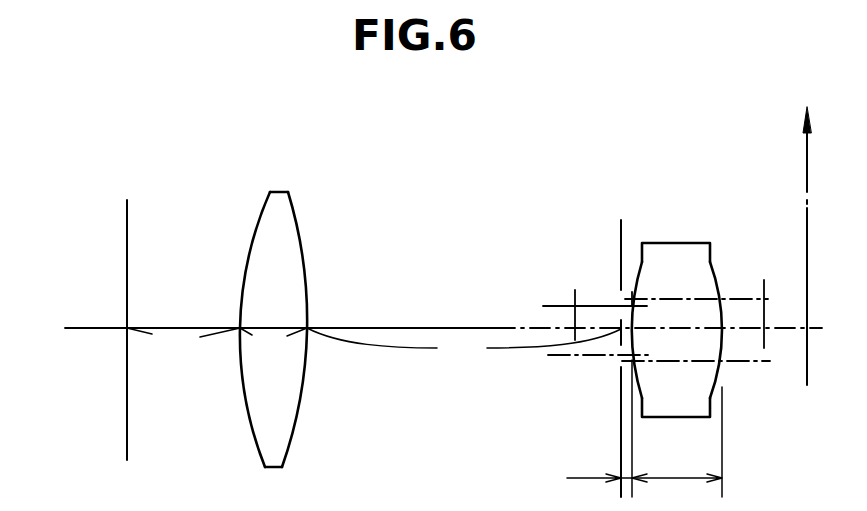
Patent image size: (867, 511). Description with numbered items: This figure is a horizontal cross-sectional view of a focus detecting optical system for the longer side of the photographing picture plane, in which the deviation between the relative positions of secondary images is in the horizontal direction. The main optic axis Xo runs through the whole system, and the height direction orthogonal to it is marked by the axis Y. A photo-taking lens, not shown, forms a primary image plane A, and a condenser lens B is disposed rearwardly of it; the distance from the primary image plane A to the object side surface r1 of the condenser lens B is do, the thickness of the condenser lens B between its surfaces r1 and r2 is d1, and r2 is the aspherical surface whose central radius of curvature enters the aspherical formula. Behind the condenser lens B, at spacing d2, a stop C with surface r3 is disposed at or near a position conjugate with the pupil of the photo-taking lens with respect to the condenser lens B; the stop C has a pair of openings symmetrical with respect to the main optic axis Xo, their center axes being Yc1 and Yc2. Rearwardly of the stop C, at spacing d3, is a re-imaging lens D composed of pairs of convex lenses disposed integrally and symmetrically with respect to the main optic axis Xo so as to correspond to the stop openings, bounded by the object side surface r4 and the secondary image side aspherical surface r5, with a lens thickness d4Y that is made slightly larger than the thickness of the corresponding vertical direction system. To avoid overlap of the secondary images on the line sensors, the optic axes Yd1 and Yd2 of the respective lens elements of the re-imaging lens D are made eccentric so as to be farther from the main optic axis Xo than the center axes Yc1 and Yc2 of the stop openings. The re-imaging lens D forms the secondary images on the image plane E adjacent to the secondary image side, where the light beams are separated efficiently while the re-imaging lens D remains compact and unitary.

The primary image plane A is at (127, 313).
The condenser lens B is at (282, 315).
The stop C is at (585, 340).
The re-imaging lens D is at (670, 340).
The image plane E is at (818, 296).
The Y direction axis Y is at (805, 140).
The main optic axis Xo is at (94, 327).
The distance from primary image plane to condenser object side surface do is at (183, 345).
The condenser lens thickness d1 is at (273, 345).
The spacing between condenser lens and stop d2 is at (464, 346).
The spacing between stop and re-imaging lens d3 is at (621, 477).
The lens thickness of re-imaging lens in horizontal direction d4Y is at (677, 468).
The object side surface of condenser lens r1 is at (262, 452).
The aspherical surface of condenser lens r2 is at (292, 443).
The stop surface r3 is at (620, 410).
The object side surface of re-imaging lens r4 is at (633, 397).
The secondary image side aspherical surface of re-imaging lens r5 is at (723, 393).
The center axis of first stop opening Yc1 is at (555, 304).
The center axis of second stop opening Yc2 is at (557, 356).
The optic axis of first re-imaging lens element Yd1 is at (697, 299).
The optic axis of second re-imaging lens element Yd2 is at (698, 362).